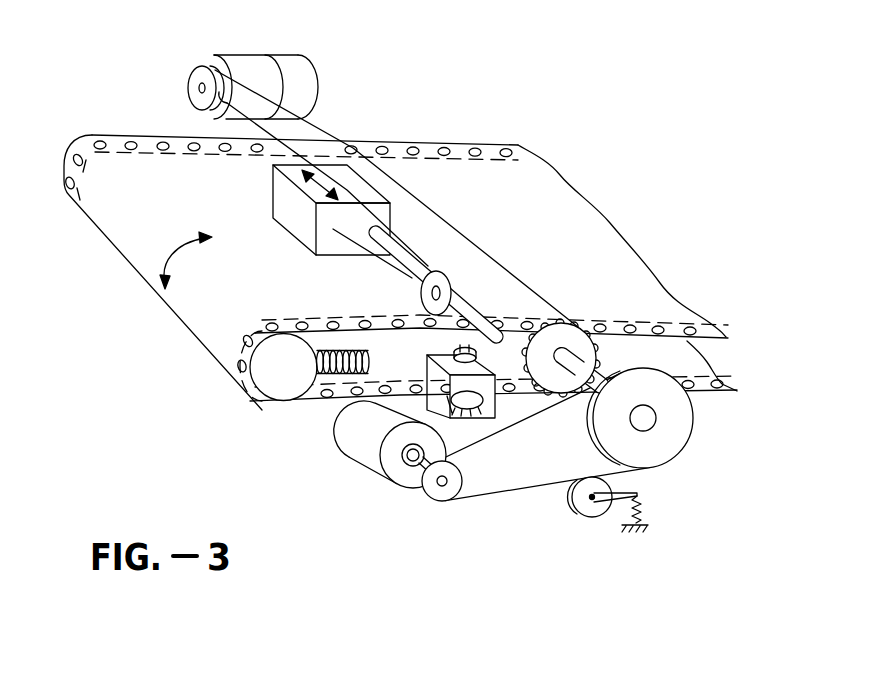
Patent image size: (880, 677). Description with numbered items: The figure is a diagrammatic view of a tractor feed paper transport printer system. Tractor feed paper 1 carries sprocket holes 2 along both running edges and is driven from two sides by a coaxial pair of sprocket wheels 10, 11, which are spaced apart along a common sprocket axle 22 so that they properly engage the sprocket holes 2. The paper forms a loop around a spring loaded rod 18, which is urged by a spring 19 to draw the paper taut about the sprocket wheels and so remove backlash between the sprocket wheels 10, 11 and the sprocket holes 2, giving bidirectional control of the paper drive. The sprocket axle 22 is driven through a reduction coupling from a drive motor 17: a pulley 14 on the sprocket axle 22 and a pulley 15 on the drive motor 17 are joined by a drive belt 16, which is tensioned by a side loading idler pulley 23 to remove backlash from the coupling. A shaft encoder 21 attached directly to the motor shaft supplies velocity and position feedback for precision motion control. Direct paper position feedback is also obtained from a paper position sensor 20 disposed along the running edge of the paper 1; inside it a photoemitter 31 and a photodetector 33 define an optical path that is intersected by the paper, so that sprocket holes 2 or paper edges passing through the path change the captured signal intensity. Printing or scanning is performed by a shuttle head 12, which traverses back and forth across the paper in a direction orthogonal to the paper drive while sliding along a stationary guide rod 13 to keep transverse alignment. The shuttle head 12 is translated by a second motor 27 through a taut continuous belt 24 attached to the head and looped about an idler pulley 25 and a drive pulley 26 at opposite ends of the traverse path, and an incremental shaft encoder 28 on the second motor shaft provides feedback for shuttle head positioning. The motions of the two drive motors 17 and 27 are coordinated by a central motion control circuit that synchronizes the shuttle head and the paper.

The tractor feed paper 1 is at (440, 143).
The sprocket holes 2 is at (490, 144).
The sprocket wheel 10 is at (343, 138).
The sprocket wheel 11 is at (582, 328).
The shuttle head 12 is at (300, 230).
The guide rod 13 is at (398, 252).
The pulley 14 is at (667, 448).
The pulley 15 is at (432, 490).
The drive belt 16 is at (543, 487).
The drive motor 17 is at (367, 446).
The spring loaded rod 18 is at (282, 388).
The spring 19 is at (347, 352).
The paper position sensor 20 is at (476, 404).
The shaft encoder 21 is at (340, 420).
The sprocket axle 22 is at (592, 377).
The idler pulley 23 is at (592, 517).
The belt 24 is at (402, 237).
The idler pulley 25 is at (448, 282).
The drive pulley 26 is at (196, 80).
The second motor 27 is at (248, 56).
The incremental shaft encoder 28 is at (303, 56).
The photoemitter 31 is at (445, 360).
The photodetector 33 is at (490, 410).